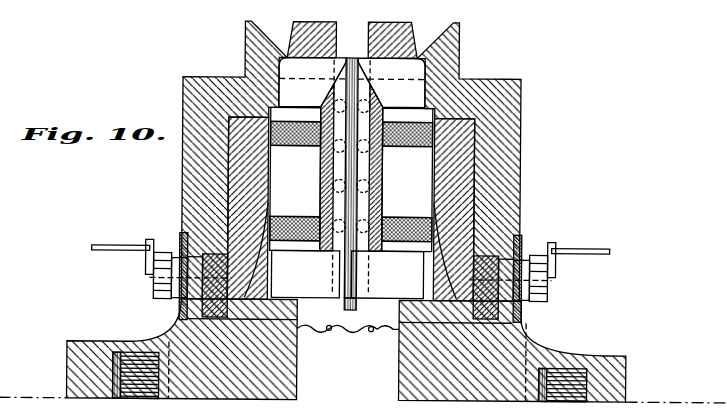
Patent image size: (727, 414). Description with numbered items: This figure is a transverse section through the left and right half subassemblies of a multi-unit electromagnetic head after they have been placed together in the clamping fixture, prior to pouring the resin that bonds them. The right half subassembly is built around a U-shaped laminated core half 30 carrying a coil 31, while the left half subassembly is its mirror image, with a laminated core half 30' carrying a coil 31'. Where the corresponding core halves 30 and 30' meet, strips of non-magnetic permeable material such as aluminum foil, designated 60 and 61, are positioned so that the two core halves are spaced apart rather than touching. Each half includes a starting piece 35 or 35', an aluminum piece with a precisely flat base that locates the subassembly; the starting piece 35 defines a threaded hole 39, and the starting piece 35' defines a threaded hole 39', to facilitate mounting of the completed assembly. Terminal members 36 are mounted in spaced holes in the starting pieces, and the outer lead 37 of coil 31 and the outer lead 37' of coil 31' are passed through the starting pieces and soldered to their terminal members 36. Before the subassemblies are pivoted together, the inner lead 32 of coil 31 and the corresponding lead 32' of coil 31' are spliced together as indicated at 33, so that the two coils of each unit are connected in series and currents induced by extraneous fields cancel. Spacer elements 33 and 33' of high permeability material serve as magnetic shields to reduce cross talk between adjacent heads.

The laminated core half 30' is at (279, 64).
The laminated core half 30 is at (431, 65).
The non-magnetic permeable strip 60 is at (352, 57).
The non-magnetic permeable strip 61 is at (352, 311).
The coil 31' is at (209, 185).
The coil 31 is at (494, 202).
The starting piece 35' is at (217, 159).
The starting piece 35 is at (487, 162).
The spacer element 33' is at (317, 156).
The spacer element / splice 33 is at (368, 212).
The coil lead 32' is at (316, 343).
The coil lead 32 is at (386, 344).
The terminal member 36 is at (100, 246).
The coil lead 37' is at (169, 276).
The coil lead 37 is at (532, 279).
The threaded hole 39' is at (136, 354).
The threaded hole 39 is at (574, 367).